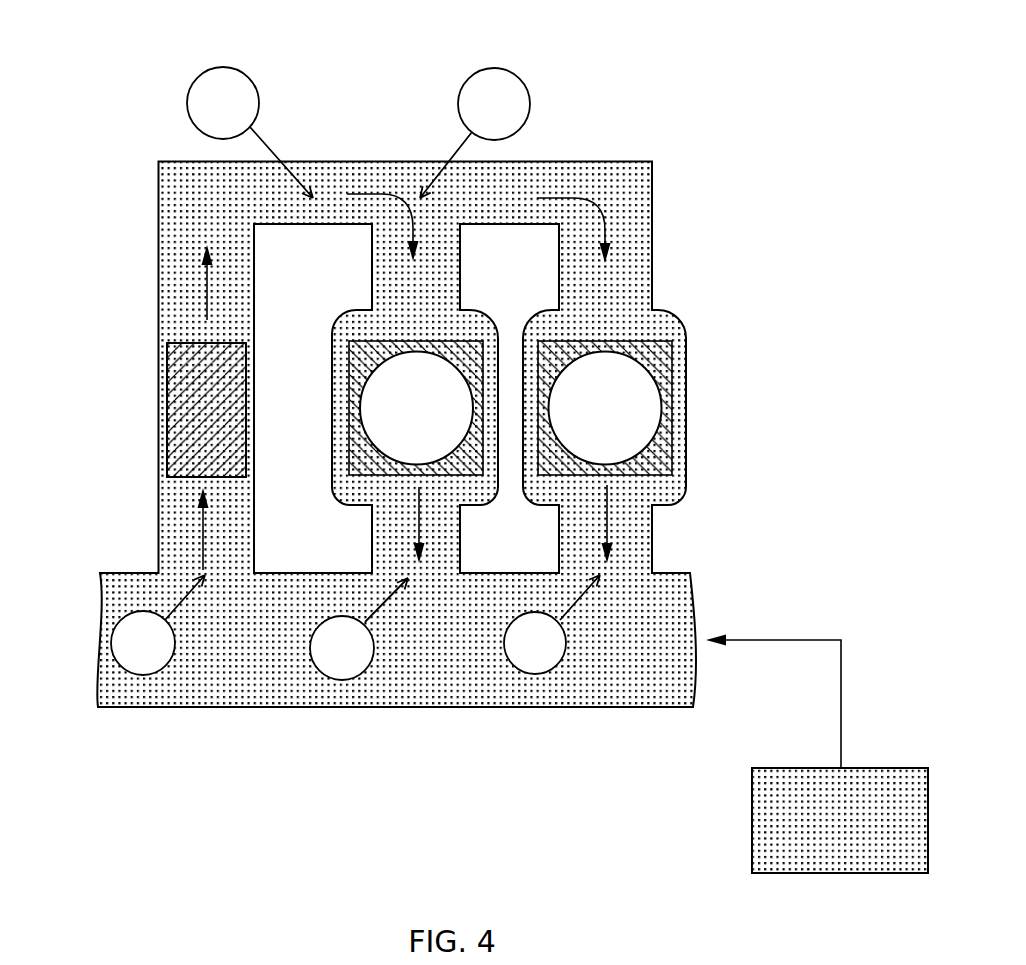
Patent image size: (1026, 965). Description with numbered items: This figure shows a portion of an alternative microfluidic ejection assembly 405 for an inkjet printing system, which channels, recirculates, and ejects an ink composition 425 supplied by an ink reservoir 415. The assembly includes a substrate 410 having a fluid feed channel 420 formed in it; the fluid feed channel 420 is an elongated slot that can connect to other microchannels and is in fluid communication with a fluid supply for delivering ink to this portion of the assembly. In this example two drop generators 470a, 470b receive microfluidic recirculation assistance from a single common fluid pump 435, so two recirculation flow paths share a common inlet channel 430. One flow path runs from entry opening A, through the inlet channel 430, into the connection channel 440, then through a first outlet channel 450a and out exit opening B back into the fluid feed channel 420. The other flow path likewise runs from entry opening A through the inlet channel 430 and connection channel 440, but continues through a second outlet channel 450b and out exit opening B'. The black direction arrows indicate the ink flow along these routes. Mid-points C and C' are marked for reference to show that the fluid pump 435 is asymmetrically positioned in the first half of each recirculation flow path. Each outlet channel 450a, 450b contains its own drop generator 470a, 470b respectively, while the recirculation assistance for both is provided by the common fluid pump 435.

The microfluidic ejection assembly 405 is at (139, 72).
The substrate 410 is at (333, 543).
The ink reservoir 415 is at (820, 832).
The fluid feed channel 420 is at (406, 653).
The ink composition 425 is at (591, 667).
The inlet channel 430 is at (175, 506).
The fluid pump 435 is at (192, 413).
The connection channel 440 is at (344, 180).
The outlet channel 450a is at (436, 518).
The outlet channel 450b is at (630, 549).
The drop generator 470a is at (330, 300).
The drop generator 470b is at (686, 300).